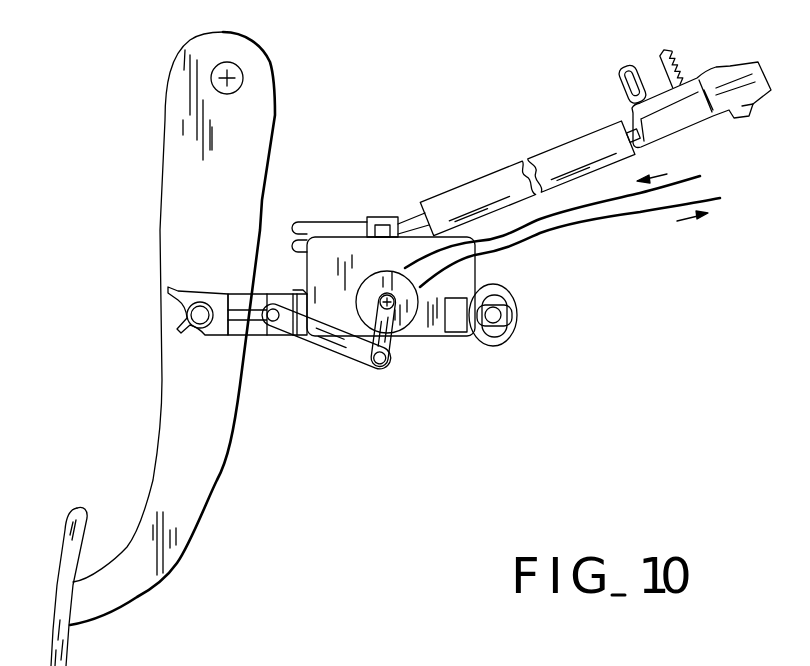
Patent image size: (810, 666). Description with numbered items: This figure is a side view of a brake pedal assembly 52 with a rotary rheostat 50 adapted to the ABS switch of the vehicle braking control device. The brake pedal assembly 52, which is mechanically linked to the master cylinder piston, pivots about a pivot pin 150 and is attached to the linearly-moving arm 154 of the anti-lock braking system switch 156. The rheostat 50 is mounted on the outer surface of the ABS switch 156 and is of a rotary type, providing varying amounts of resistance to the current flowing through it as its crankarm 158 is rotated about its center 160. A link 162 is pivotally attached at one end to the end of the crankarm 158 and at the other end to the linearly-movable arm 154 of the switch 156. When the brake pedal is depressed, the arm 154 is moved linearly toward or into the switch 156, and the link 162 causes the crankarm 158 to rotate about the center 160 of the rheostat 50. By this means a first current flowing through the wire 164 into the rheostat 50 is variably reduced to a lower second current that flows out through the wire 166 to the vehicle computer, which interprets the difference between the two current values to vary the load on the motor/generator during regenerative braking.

The rheostat 50 is at (515, 236).
The brake pedal assembly 52 is at (107, 447).
The pivot pin 150 is at (237, 68).
The linearly-moving arm 154 is at (242, 300).
The ABS switch 156 is at (467, 278).
The crankarm 158 is at (492, 178).
The center 160 is at (395, 270).
The link 162 is at (352, 352).
The wire 164 is at (562, 215).
The wire 166 is at (597, 232).